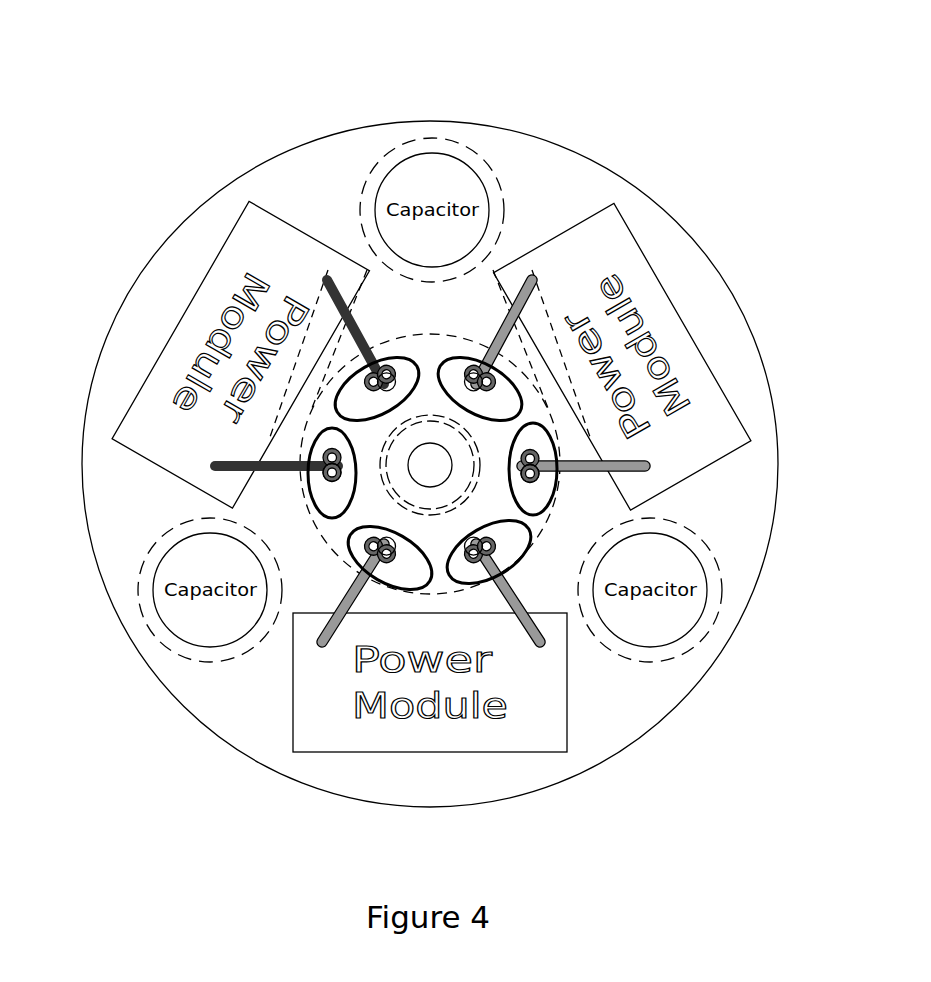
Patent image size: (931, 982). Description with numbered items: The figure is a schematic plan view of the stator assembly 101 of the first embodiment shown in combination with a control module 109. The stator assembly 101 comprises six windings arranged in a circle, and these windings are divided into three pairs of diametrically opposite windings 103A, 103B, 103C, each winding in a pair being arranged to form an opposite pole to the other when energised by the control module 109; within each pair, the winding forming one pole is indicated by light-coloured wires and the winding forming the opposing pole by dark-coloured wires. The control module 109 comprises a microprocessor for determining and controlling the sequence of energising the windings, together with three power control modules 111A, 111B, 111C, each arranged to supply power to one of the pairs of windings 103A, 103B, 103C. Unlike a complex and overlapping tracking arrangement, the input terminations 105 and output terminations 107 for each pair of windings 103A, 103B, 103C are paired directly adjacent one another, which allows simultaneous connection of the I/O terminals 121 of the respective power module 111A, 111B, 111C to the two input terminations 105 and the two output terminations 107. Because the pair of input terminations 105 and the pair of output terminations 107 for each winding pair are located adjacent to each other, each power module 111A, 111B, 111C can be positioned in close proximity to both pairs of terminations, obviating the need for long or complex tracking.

The stator assembly 101 is at (444, 423).
The control module 109 is at (149, 126).
The power control module 111A is at (664, 335).
The power control module 111B is at (550, 735).
The power control module 111C is at (188, 327).
The I/O terminals 121 is at (322, 290).
The input terminations 105 is at (465, 401).
The output terminations 107 is at (386, 403).
The pair of windings 103A is at (404, 360).
The pair of windings 103B is at (317, 488).
The pair of windings 103C is at (466, 364).